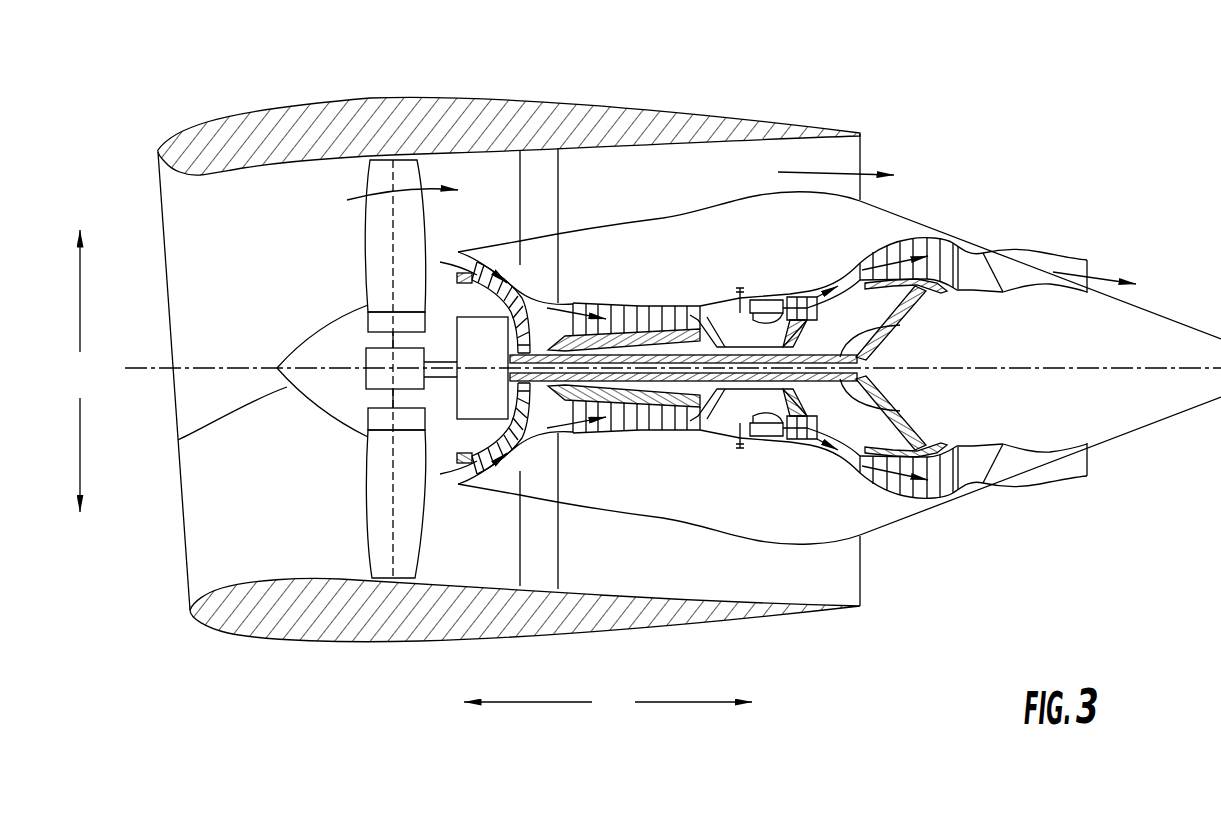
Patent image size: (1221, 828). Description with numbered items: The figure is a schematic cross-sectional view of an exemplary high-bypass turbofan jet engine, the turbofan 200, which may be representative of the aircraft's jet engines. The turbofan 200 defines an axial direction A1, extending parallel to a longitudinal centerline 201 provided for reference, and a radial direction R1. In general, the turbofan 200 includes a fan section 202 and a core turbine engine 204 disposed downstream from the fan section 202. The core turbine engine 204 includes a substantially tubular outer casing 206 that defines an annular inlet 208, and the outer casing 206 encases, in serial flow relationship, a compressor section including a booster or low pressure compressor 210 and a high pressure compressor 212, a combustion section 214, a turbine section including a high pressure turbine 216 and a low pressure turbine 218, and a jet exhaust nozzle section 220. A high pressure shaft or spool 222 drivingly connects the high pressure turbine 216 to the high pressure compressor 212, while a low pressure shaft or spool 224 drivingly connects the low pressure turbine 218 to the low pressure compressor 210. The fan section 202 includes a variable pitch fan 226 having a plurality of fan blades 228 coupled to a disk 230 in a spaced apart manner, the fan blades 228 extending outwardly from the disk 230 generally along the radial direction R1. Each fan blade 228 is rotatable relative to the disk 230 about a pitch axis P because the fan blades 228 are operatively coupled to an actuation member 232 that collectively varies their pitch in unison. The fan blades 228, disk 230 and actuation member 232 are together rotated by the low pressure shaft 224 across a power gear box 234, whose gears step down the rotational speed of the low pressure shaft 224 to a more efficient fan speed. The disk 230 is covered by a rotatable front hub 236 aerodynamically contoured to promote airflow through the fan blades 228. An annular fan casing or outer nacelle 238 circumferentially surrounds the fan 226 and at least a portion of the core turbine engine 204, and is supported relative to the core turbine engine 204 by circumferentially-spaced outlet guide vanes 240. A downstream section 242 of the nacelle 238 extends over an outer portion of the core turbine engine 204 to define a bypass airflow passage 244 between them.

The turbofan 200 is at (1001, 109).
The longitudinal centerline 201 is at (1027, 368).
The fan section 202 is at (325, 185).
The core turbine engine 204 is at (679, 254).
The outer casing 206 is at (717, 537).
The annular inlet 208 is at (468, 478).
The low pressure compressor 210 is at (505, 490).
The high pressure compressor 212 is at (587, 438).
The combustion section 214 is at (760, 442).
The high pressure turbine 216 is at (832, 443).
The low pressure turbine 218 is at (944, 500).
The jet exhaust nozzle section 220 is at (1006, 485).
The high pressure shaft 222 is at (761, 345).
The low pressure shaft 224 is at (852, 350).
The variable pitch fan 226 is at (331, 422).
The fan blades 228 is at (368, 522).
The disk 230 is at (387, 323).
The actuation member 232 is at (363, 352).
The power gear box 234 is at (490, 335).
The front hub 236 is at (178, 440).
The outer nacelle 238 is at (413, 643).
The outlet guide vanes 240 is at (558, 179).
The downstream section 242 is at (791, 124).
The bypass airflow passage 244 is at (745, 186).
The pitch axis P is at (397, 178).
The radial direction R1 is at (85, 371).
The axial direction A1 is at (608, 704).